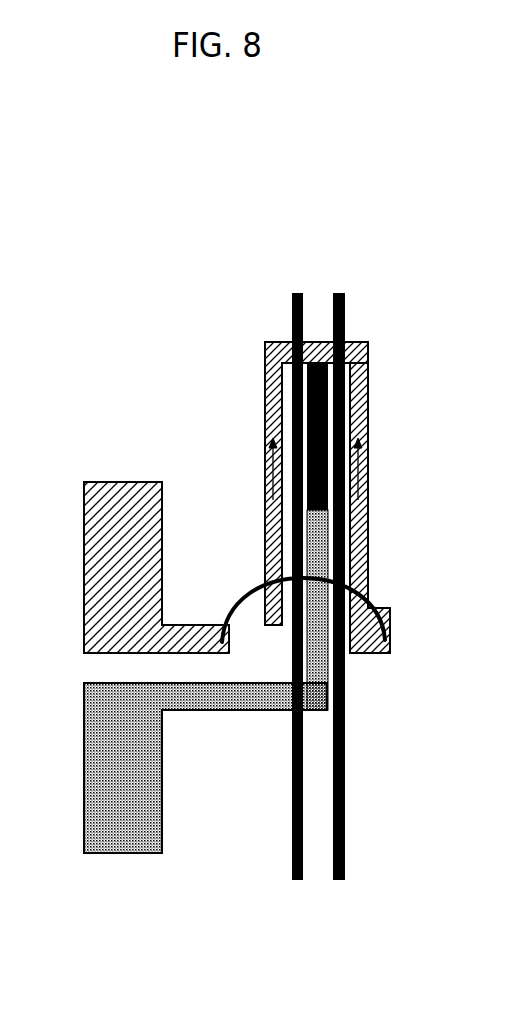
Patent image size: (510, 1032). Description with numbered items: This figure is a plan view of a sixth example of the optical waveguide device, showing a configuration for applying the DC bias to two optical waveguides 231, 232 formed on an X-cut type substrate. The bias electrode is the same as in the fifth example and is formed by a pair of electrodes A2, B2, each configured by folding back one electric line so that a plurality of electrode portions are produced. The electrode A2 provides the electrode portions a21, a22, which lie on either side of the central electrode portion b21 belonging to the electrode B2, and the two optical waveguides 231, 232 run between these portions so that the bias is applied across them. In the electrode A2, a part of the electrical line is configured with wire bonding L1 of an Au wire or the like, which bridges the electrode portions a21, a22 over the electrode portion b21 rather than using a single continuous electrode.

The electrode A2 is at (87, 476).
The electrode B2 is at (88, 857).
The electrode portion a21 is at (273, 381).
The electrode portion a22 is at (358, 406).
The electrode portion b21 is at (328, 380).
The wire bonding L1 is at (350, 586).
The optical waveguide 231 is at (292, 860).
The optical waveguide 232 is at (345, 860).